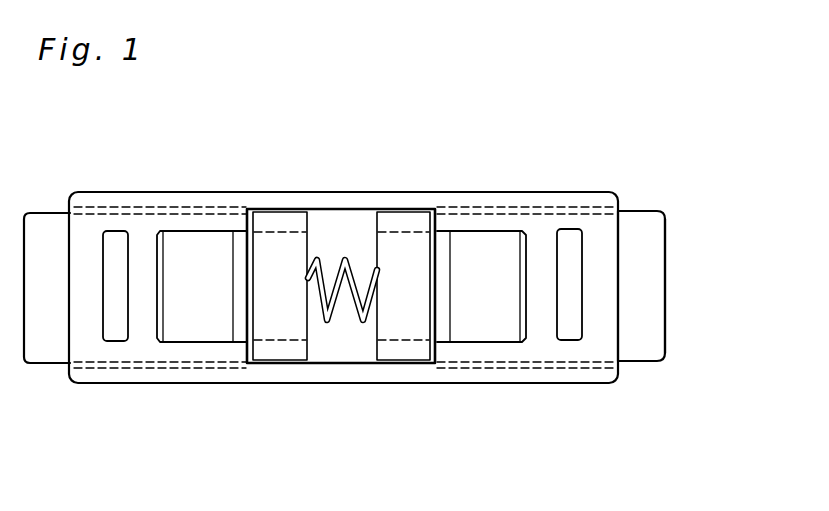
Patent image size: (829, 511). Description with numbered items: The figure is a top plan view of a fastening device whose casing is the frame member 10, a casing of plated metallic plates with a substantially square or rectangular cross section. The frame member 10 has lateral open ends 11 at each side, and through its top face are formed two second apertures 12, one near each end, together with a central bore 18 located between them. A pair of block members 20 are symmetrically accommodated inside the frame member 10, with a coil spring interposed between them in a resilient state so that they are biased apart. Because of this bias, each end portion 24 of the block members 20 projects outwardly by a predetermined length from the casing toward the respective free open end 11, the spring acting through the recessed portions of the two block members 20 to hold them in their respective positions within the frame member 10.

The frame member 10 is at (498, 192).
The lateral open end 11 is at (620, 210).
The second aperture 12 is at (572, 332).
The central bore 18 is at (346, 313).
The block member 20 is at (648, 262).
The end portion 24 is at (665, 313).